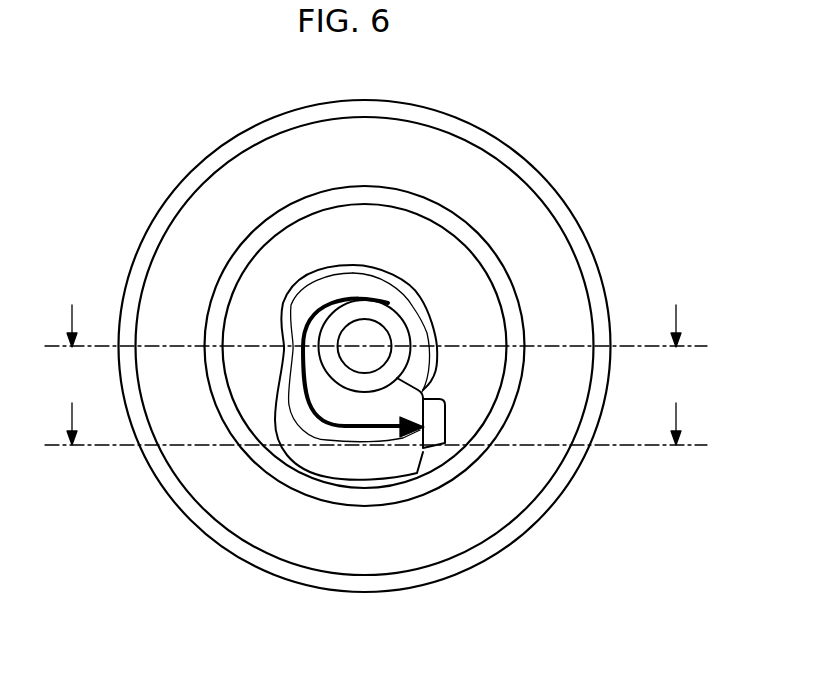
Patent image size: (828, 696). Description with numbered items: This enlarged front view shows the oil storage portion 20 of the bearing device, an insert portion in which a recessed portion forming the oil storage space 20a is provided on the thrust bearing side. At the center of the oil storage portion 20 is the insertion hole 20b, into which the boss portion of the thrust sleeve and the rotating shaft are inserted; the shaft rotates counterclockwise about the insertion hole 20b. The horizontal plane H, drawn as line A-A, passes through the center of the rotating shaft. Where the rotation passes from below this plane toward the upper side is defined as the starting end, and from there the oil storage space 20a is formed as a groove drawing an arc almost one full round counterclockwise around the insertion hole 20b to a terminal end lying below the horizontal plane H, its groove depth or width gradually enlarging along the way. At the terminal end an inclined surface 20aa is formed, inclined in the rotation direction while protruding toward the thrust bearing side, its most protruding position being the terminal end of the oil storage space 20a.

The oil storage portion 20 is at (497, 138).
The oil storage space 20a is at (348, 413).
The inclined surface 20aa is at (442, 423).
The insertion hole 20b is at (373, 333).
The horizontal plane H is at (640, 345).